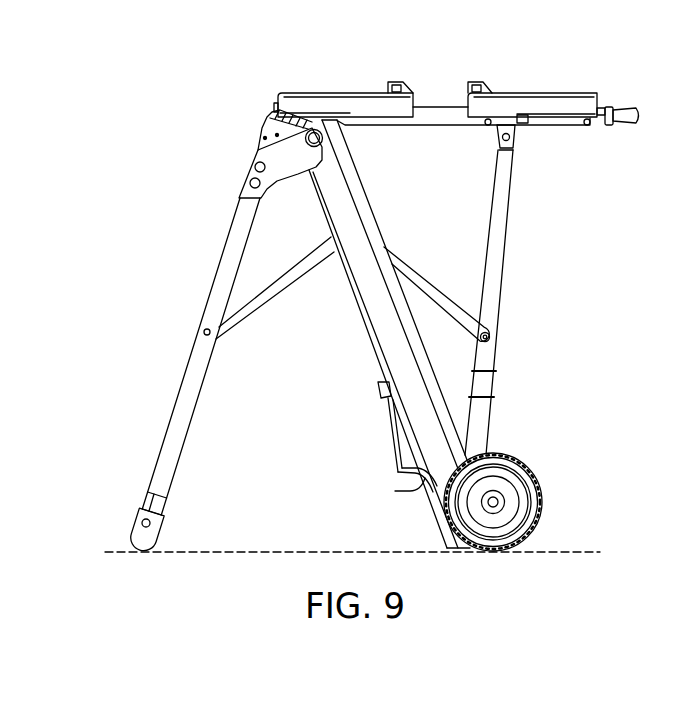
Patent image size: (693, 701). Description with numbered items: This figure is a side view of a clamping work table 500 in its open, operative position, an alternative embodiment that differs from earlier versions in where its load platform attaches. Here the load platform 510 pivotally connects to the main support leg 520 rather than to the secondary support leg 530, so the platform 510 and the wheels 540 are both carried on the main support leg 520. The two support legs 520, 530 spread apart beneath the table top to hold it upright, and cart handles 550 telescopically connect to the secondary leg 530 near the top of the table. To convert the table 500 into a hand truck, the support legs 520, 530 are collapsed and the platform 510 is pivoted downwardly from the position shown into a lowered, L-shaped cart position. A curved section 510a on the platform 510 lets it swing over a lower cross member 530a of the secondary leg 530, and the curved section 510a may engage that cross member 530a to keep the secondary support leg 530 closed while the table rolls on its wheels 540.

The clamping work table 500 is at (339, 302).
The load platform 510 is at (386, 419).
The curved section 510a is at (396, 491).
The main support leg 520 is at (367, 298).
The secondary support leg 530 is at (182, 383).
The lower cross member 530a is at (130, 524).
The wheels 540 is at (543, 500).
The cart handles 550 is at (268, 113).